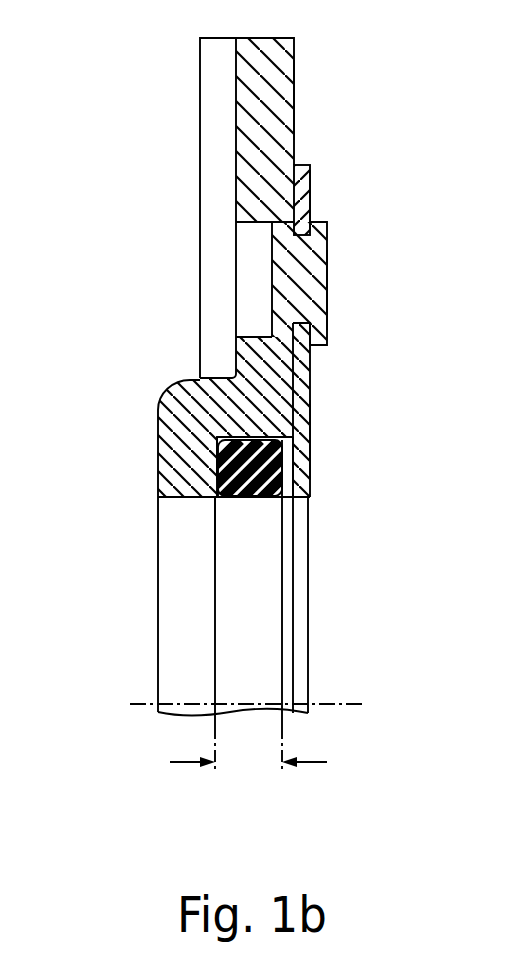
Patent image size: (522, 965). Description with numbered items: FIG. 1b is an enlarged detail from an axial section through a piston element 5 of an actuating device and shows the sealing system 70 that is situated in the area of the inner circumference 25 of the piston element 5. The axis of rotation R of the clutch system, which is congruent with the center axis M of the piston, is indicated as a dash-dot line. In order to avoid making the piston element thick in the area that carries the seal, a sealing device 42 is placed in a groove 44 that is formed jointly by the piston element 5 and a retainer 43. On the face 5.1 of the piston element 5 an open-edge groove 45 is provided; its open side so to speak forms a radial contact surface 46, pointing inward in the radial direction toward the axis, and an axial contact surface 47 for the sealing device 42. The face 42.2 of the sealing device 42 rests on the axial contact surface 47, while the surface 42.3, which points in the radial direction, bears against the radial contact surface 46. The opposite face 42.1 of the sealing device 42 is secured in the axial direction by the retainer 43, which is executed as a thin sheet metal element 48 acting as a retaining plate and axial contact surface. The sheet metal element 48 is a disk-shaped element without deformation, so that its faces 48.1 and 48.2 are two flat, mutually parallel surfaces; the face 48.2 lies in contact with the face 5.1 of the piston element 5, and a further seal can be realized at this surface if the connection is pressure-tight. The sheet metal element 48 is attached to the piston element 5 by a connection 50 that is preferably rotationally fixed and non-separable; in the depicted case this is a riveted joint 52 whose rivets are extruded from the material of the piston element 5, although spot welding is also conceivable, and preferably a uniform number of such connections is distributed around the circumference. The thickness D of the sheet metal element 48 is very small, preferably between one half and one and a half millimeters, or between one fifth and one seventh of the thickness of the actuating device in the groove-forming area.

The piston element 5 is at (257, 85).
The face of piston element 5.1 is at (305, 94).
The face of sheet metal element 48.2 is at (291, 188).
The face of sheet metal element 48.1 is at (320, 188).
The connection 50 is at (340, 254).
The riveted joint 52 is at (313, 297).
The retainer 43 is at (314, 410).
The sheet metal element 48 is at (300, 385).
The sealing system 70 is at (340, 406).
The sealing device 42 is at (262, 480).
The face of sealing device 42.1 is at (284, 464).
The face of sealing device 42.2 is at (209, 486).
The surface of sealing device 42.3 is at (263, 437).
The groove 44 is at (293, 447).
The open-edge groove 45 is at (217, 462).
The radial contact surface 46 is at (217, 445).
The axial contact surface 47 is at (203, 498).
The inner circumference 25 is at (183, 512).
The axis of rotation R is at (277, 660).
The center axis M is at (358, 702).
The thickness of sheet metal element D is at (248, 749).